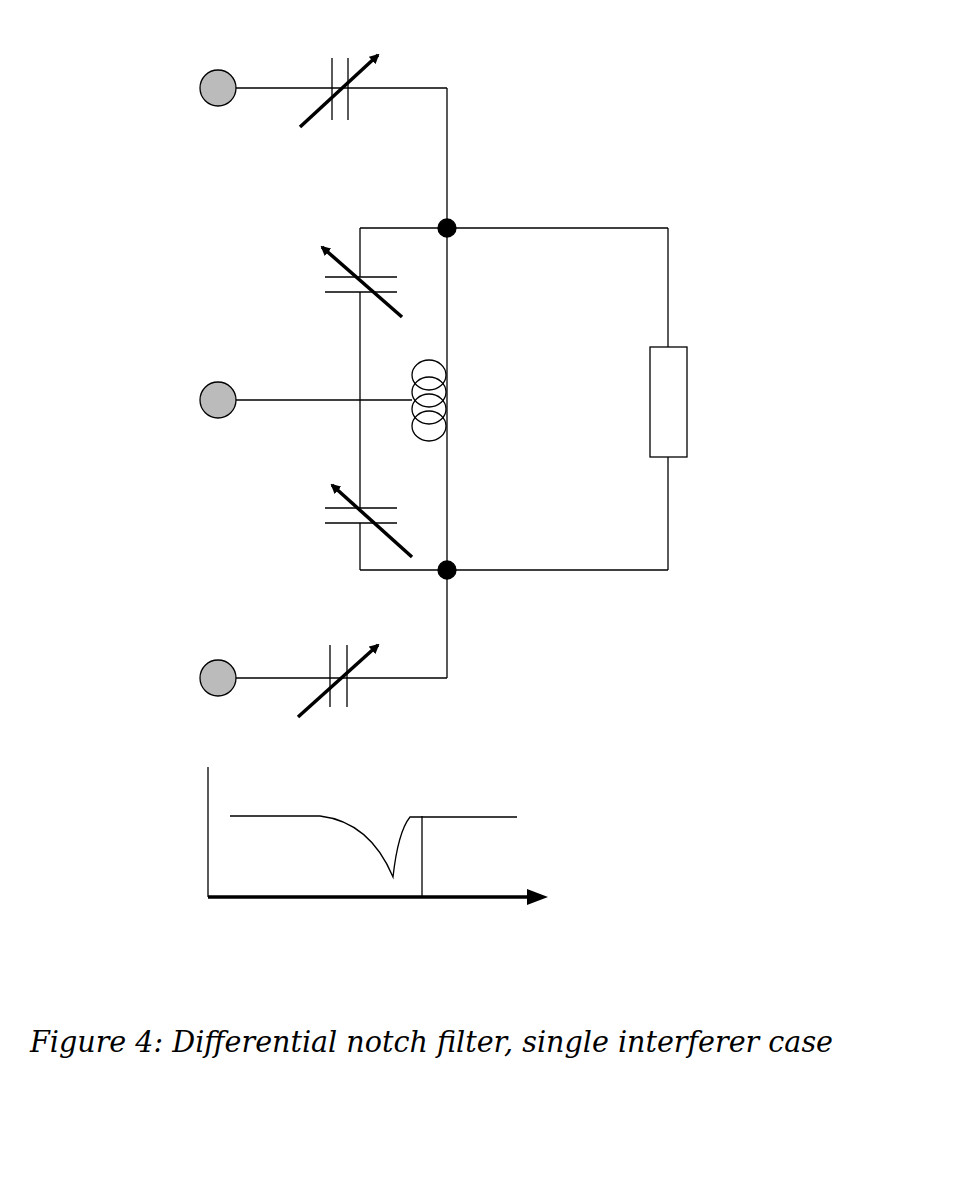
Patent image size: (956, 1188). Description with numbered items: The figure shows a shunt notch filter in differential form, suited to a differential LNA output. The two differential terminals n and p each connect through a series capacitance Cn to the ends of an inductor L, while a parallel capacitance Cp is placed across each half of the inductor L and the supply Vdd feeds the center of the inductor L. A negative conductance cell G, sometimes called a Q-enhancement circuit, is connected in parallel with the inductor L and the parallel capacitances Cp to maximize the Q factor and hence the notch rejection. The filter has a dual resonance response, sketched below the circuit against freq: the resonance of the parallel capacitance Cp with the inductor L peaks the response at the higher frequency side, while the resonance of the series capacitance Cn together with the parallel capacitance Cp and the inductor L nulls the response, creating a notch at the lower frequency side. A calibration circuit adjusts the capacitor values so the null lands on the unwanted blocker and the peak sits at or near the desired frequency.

The negative differential input terminal n is at (302, 89).
The positive differential input terminal p is at (302, 679).
The supply voltage terminal Vdd is at (267, 403).
The series capacitance Cn is at (323, 387).
The parallel capacitance Cp is at (334, 402).
The inductor L is at (449, 400).
The negative conductance cell G is at (692, 399).
The frequency response graph freq is at (410, 852).